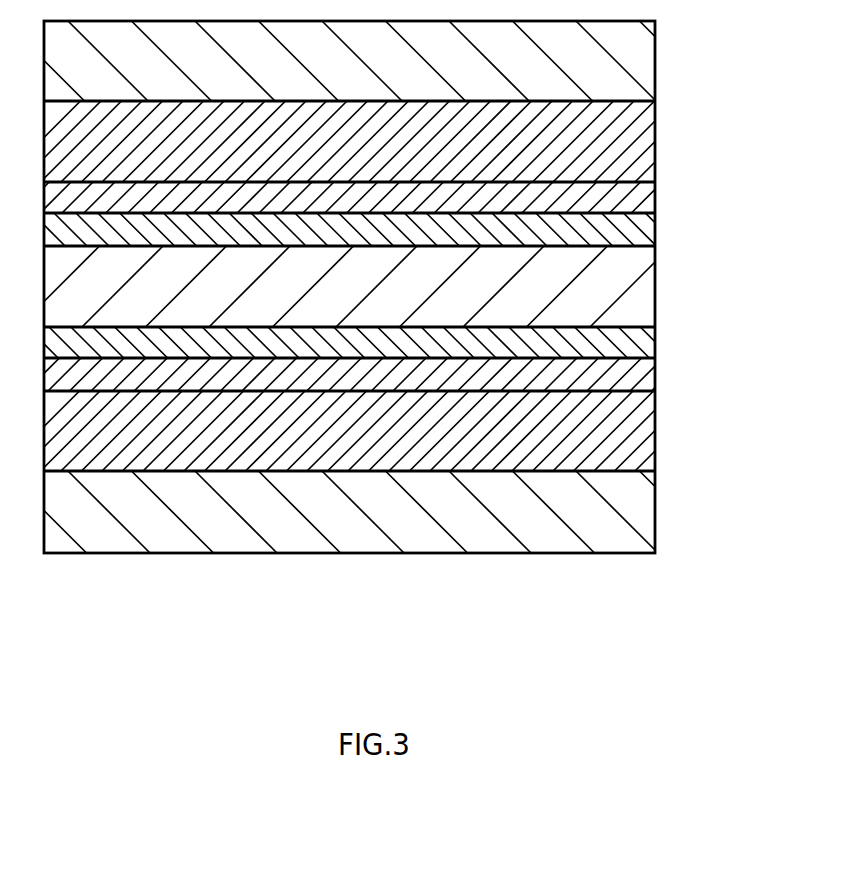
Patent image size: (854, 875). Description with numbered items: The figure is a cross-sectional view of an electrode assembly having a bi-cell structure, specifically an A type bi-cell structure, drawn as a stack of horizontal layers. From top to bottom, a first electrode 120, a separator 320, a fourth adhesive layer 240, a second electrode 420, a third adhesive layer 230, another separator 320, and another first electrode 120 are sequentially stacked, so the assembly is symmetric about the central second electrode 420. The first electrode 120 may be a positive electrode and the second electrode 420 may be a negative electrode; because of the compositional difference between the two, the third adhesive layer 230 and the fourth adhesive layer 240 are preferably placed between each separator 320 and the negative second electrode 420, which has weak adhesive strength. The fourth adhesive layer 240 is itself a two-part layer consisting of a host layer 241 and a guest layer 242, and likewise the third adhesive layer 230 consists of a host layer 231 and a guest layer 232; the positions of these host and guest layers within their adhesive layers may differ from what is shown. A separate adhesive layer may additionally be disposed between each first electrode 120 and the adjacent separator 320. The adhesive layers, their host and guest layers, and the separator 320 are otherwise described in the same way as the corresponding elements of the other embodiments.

The first electrode 120 is at (643, 59).
The separator 320 is at (643, 143).
The fourth adhesive layer 240 is at (423, 215).
The host layer 241 is at (643, 195).
The guest layer 242 is at (643, 229).
The second electrode 420 is at (643, 288).
The third adhesive layer 230 is at (423, 359).
The guest layer 232 is at (643, 340).
The host layer 231 is at (643, 373).